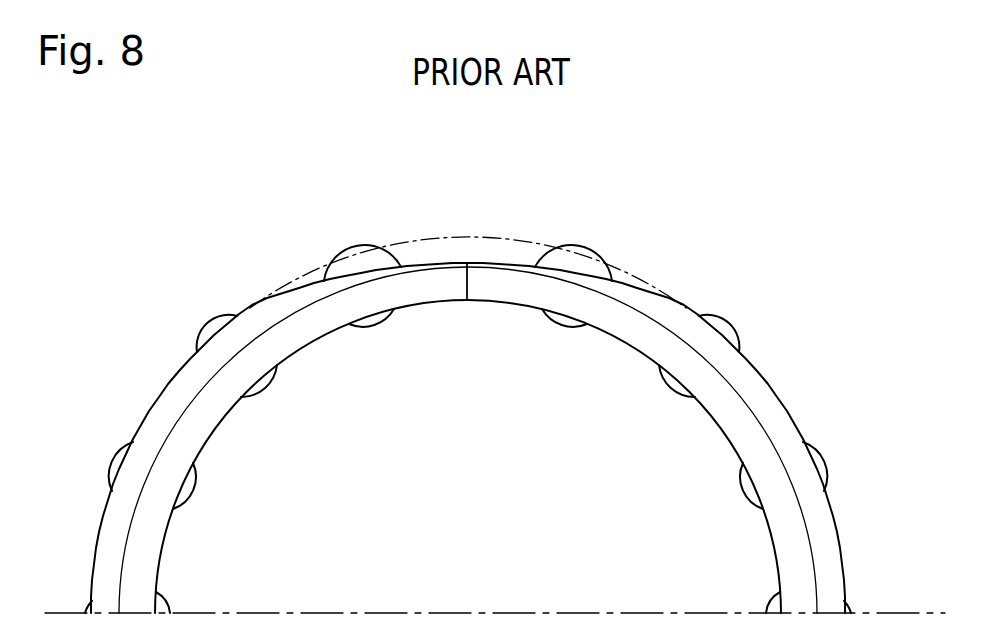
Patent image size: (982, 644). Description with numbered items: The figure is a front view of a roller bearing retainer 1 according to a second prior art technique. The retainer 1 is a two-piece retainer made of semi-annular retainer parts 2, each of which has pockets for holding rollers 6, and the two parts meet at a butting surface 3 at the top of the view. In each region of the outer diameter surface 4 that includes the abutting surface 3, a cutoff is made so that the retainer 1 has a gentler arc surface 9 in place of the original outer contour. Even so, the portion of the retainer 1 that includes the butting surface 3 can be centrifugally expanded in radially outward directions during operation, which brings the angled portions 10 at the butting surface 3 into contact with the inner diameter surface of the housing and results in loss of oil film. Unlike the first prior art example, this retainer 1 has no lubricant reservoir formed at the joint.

The retainer 1 is at (739, 317).
The semi-annular retainer part 2 is at (157, 425).
The butting surface 3 is at (466, 283).
The outer diameter surface 4 is at (188, 362).
The roller 6 is at (353, 245).
The gentler arc surface 9 is at (287, 286).
The angled portion 10 is at (463, 263).